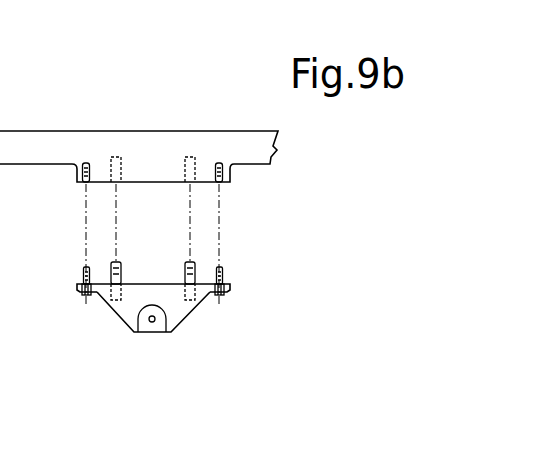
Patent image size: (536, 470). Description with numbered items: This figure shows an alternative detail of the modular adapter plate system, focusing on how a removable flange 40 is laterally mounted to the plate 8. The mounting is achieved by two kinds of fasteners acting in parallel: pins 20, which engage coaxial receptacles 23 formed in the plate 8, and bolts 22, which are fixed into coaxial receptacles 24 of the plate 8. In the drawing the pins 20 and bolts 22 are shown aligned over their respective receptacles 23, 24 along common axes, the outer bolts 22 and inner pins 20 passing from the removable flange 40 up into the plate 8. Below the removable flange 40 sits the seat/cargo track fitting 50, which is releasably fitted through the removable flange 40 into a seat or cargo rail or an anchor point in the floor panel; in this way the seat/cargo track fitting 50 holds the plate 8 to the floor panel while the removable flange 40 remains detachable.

The plate 8 is at (165, 106).
The pins 20 is at (121, 264).
The bolts 22 is at (83, 273).
The coaxial receptacles 23 is at (118, 167).
The coaxial receptacles 24 is at (83, 171).
The removable flange 40 is at (196, 322).
The seat/cargo track fitting 50 is at (152, 322).